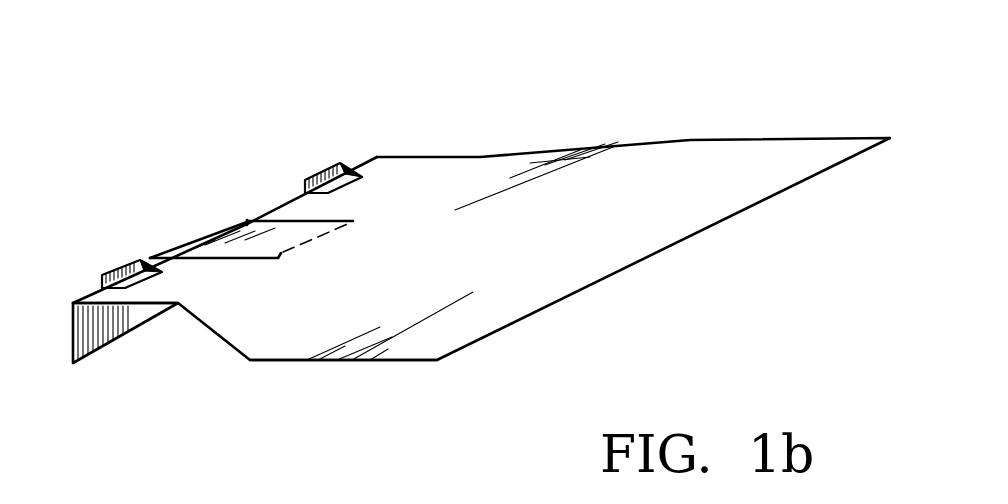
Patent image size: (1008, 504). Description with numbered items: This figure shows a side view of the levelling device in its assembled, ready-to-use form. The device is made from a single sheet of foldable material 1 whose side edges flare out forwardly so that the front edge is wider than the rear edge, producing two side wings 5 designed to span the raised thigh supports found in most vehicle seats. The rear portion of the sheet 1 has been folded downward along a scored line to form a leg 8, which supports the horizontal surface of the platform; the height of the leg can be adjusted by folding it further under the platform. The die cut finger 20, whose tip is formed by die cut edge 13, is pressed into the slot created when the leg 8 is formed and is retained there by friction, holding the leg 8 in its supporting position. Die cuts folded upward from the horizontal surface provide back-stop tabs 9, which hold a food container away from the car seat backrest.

The sheet of foldable material 1 is at (623, 192).
The wings 5 is at (338, 362).
The leg 8 is at (98, 335).
The back-stop tabs 9 is at (330, 165).
The die cut edge 13 is at (173, 247).
The die cut finger 20 is at (218, 243).